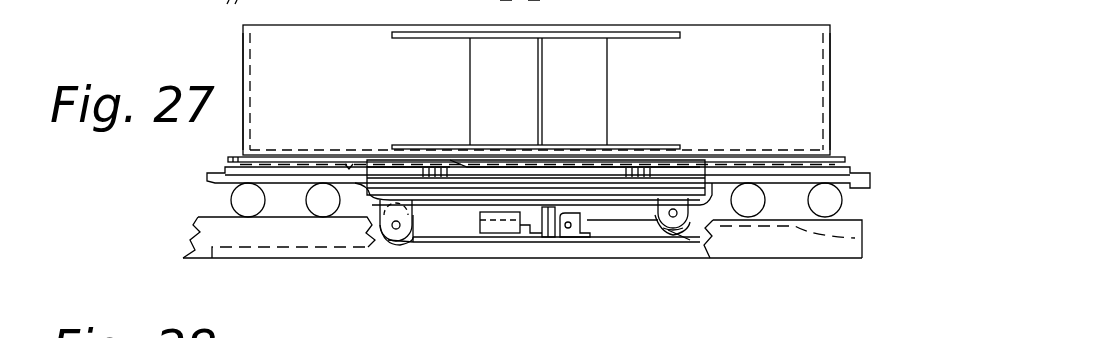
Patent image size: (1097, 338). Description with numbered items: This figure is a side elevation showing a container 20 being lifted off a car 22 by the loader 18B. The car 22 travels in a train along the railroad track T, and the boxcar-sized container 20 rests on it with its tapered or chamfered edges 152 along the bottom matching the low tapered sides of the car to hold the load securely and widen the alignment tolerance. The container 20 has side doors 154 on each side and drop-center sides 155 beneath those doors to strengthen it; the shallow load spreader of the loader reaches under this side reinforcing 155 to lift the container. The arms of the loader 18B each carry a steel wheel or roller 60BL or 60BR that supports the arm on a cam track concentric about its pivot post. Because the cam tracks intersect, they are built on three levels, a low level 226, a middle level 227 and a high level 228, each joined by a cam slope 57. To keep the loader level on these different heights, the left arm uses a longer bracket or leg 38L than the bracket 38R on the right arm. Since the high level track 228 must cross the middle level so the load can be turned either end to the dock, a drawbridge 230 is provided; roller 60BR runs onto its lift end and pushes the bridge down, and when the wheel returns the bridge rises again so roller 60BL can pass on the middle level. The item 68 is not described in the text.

The container 20 is at (818, 79).
The car 22 is at (228, 163).
The tapered or chamfered edges 152 is at (253, 158).
The floor member 68 is at (272, 165).
The side doors 154 is at (547, 85).
The drop-center sides 155 is at (605, 163).
The loader 18B is at (677, 175).
The bracket 38L is at (410, 212).
The bracket 38R is at (671, 208).
The middle level 227 is at (452, 240).
The drawbridge 230 is at (577, 237).
The roller 60BL is at (405, 240).
The roller 60BR is at (668, 230).
The cam slope 57 is at (390, 245).
The railroad track T is at (205, 217).
The low level 226 is at (285, 247).
The high level 228 is at (783, 243).